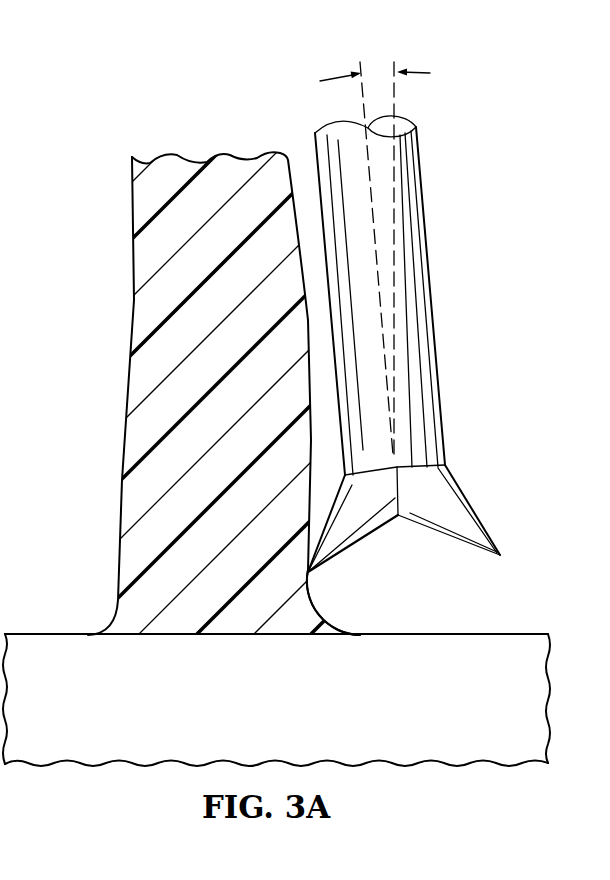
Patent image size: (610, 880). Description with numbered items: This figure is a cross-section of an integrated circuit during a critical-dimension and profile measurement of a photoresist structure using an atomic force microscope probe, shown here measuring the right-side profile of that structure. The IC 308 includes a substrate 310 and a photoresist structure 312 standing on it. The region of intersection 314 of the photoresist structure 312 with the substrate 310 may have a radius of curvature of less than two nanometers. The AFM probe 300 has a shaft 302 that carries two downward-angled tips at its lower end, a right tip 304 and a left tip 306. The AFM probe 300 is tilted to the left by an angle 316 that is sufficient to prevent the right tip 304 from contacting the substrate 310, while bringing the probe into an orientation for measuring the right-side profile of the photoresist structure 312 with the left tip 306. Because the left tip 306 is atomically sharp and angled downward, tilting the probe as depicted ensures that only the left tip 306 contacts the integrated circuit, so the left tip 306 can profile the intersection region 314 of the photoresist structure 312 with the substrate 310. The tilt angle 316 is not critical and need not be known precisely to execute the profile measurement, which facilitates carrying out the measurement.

The AFM probe 300 is at (419, 306).
The tool shaft 302 is at (431, 288).
The right tip 304 is at (471, 505).
The left tip 306 is at (363, 540).
The IC 308 is at (305, 344).
The substrate 310 is at (286, 710).
The photoresist structure 312 is at (132, 322).
The region of intersection 314 is at (370, 630).
The angle 316 is at (416, 72).